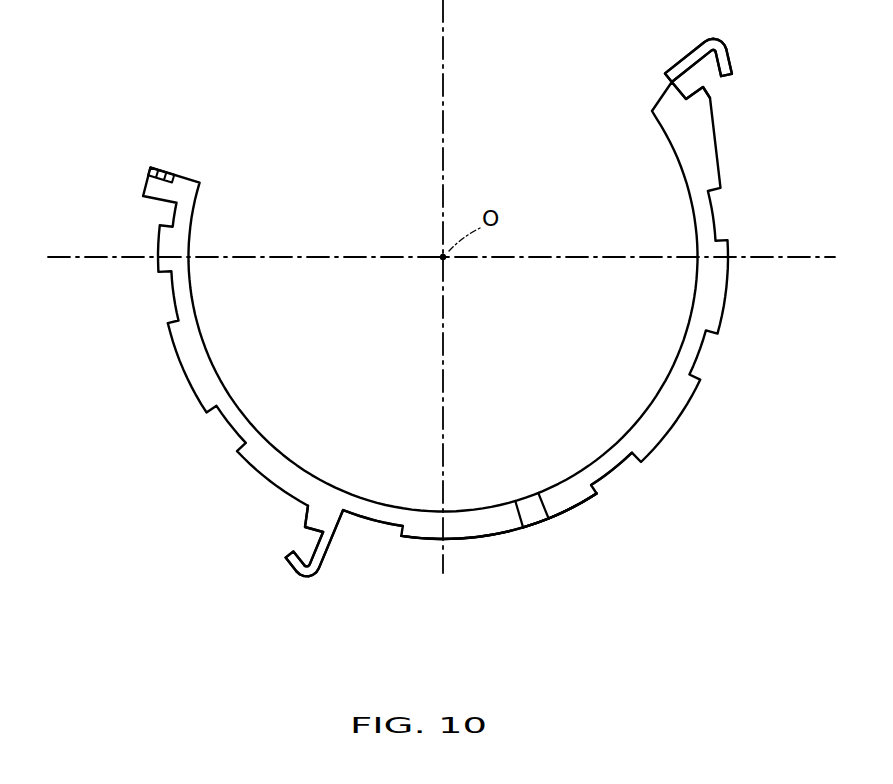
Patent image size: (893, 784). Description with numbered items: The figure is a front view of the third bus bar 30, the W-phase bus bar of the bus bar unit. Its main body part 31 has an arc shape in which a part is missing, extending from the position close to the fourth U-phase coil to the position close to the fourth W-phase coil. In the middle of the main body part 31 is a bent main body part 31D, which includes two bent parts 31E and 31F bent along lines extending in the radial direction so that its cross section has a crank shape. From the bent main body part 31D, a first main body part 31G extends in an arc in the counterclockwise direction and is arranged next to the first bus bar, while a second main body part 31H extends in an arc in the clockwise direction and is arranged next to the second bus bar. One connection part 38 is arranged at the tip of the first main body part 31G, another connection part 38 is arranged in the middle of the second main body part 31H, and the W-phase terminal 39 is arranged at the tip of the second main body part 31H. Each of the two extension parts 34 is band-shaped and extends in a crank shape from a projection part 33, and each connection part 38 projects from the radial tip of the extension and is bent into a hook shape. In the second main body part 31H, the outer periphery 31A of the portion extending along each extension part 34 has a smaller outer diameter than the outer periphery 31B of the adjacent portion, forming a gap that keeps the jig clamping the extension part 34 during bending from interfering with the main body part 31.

The third bus bar 30 is at (157, 343).
The main body part 31 is at (709, 591).
The outer periphery 31A is at (373, 521).
The outer periphery 31B is at (418, 540).
The bent main body part 31D is at (624, 573).
The bent part 31E is at (519, 530).
The bent part 31F is at (553, 509).
The first main body part 31G is at (608, 468).
The second main body part 31H is at (463, 543).
The projection part 33 is at (305, 522).
The extension part 34 is at (320, 572).
The connection part 38 is at (289, 563).
The W-phase terminal 39 is at (148, 180).